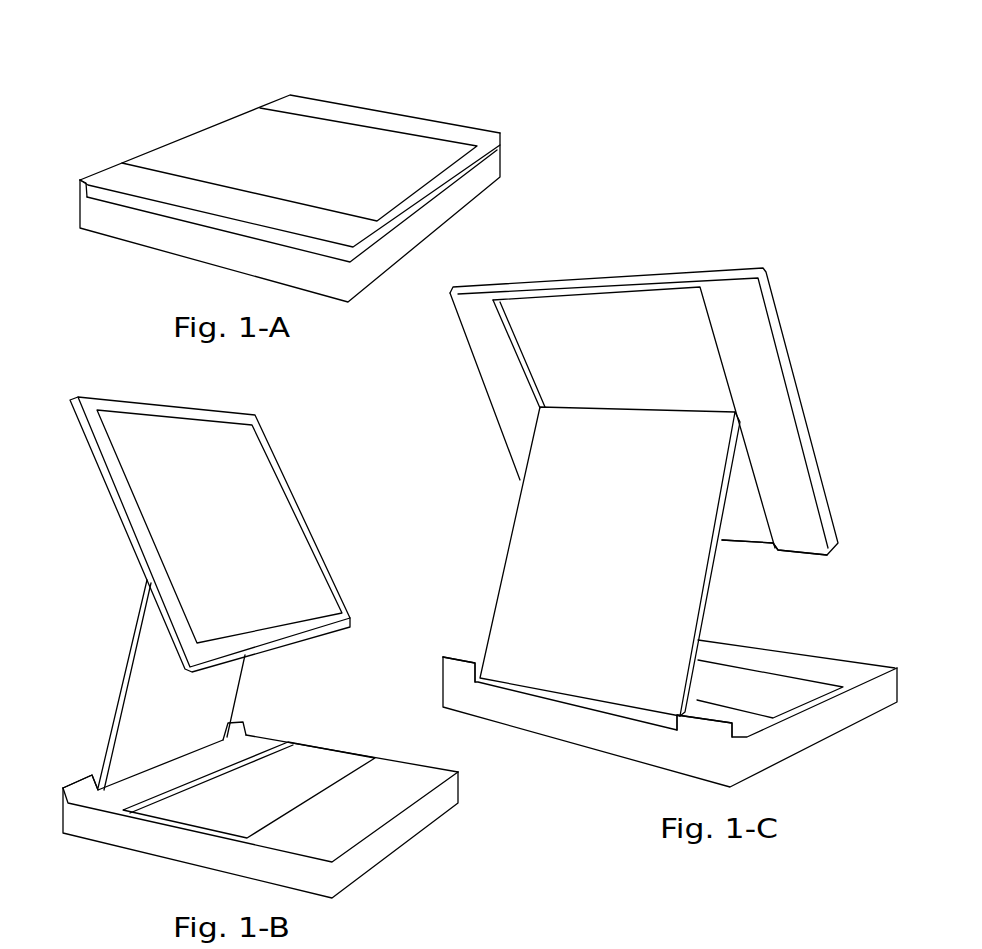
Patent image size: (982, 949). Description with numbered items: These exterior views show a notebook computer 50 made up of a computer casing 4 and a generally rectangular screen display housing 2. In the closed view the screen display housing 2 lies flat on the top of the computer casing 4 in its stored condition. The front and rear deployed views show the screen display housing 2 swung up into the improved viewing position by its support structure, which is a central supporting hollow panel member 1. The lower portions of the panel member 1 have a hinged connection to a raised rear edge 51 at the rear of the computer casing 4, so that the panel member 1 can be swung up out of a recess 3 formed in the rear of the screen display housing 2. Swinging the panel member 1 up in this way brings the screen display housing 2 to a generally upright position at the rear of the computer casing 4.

In FIG. 1A, the notebook computer 50 is at (286, 151).
In FIG. 1B, the notebook computer 50 is at (250, 628).
In FIG. 1C, the notebook computer 50 is at (646, 482).
In FIG. 1A, the central supporting hollow panel member 1 is at (195, 128).
In FIG. 1B, the central supporting hollow panel member 1 is at (235, 698).
In FIG. 1C, the central supporting hollow panel member 1 is at (507, 555).
In FIG. 1A, the screen display housing 2 is at (423, 118).
In FIG. 1B, the screen display housing 2 is at (300, 507).
In FIG. 1C, the screen display housing 2 is at (618, 273).
In FIG. 1C, the recess 3 is at (757, 543).
In FIG. 1A, the computer casing 4 is at (455, 217).
In FIG. 1B, the computer casing 4 is at (393, 855).
In FIG. 1C, the computer casing 4 is at (828, 742).
In FIG. 1A, the raised rear edge 51 is at (80, 182).
In FIG. 1B, the raised rear edge 51 is at (62, 787).
In FIG. 1C, the raised rear edge 51 is at (442, 657).